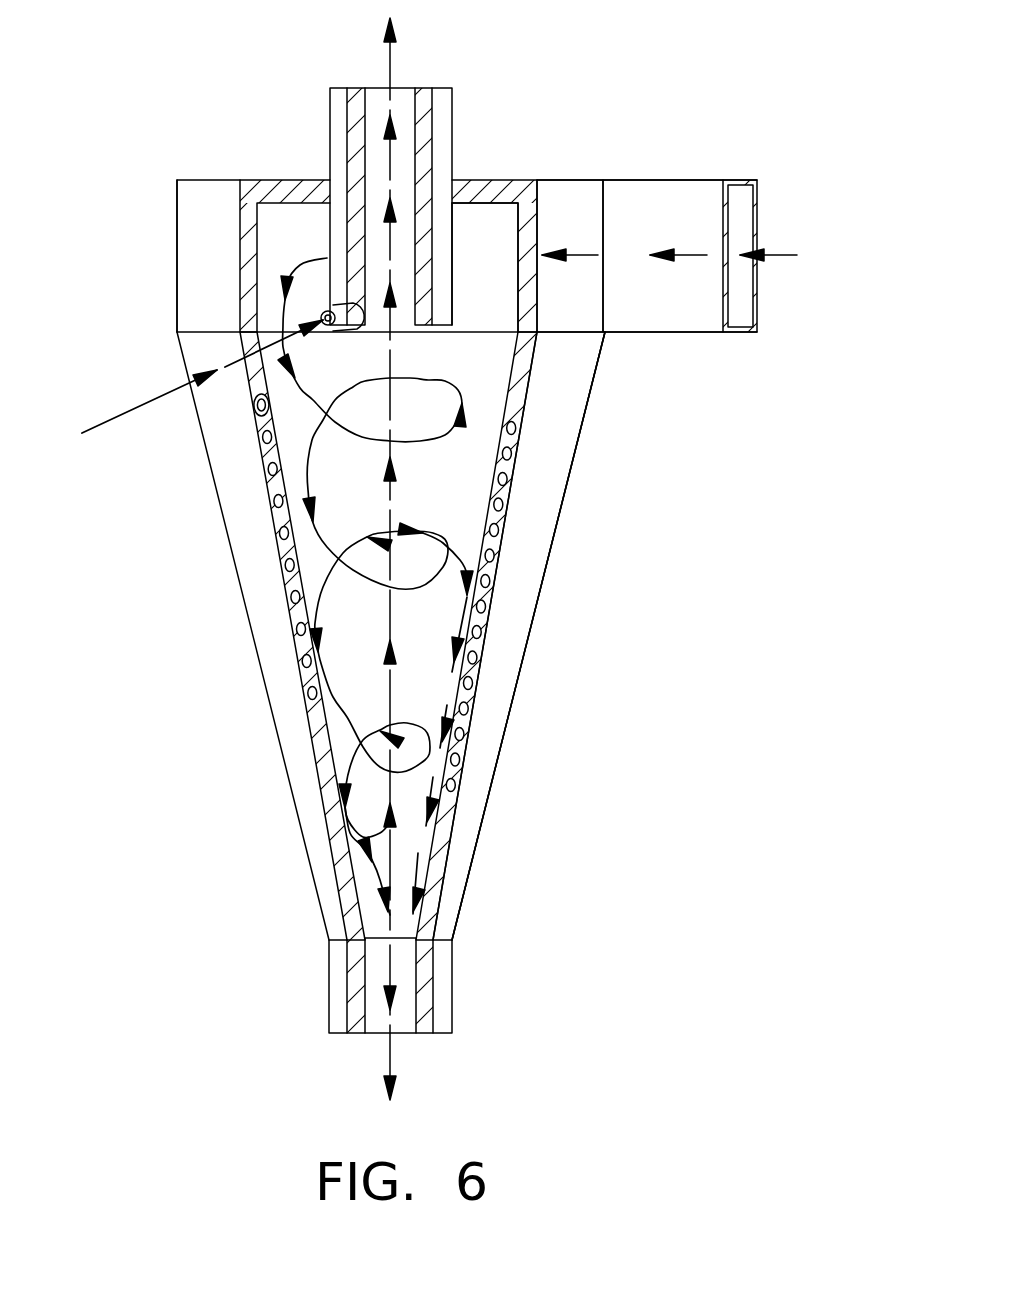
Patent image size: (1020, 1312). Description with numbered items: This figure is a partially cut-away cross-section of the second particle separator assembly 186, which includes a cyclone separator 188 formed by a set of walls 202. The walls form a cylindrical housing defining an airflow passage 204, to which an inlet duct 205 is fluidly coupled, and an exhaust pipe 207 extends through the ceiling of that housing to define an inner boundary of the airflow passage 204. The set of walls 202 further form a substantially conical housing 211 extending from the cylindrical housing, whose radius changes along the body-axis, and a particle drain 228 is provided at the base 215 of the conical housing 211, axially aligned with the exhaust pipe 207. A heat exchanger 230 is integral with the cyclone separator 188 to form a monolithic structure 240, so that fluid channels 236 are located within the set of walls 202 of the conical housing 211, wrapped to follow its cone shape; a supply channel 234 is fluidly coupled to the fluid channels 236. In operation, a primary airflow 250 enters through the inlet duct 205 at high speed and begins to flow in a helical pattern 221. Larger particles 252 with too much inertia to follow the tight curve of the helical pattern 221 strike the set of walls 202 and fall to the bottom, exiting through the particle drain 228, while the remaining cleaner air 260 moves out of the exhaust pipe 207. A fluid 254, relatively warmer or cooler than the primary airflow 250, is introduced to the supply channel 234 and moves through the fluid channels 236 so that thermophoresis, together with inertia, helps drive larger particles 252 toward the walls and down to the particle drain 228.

The second particle separator assembly 186 is at (668, 47).
The remaining cleaner air 260 is at (386, 62).
The exhaust pipe 207 is at (440, 127).
The supply channel 234 is at (343, 318).
The airflow passage 204 is at (468, 238).
The cyclone separator 188 is at (567, 188).
The monolithic structure 240 is at (175, 232).
The primary airflow 250 is at (782, 253).
The inlet duct 205 is at (668, 338).
The fluid 254 is at (148, 397).
The heat exchanger 230 is at (590, 461).
The helical pattern 221 is at (407, 533).
The fluid channel 236 is at (273, 553).
The conical housing 211 is at (540, 578).
The set of walls 202 is at (500, 652).
The larger particles 252 is at (390, 960).
The base 215 is at (453, 943).
The particle drain 228 is at (440, 987).